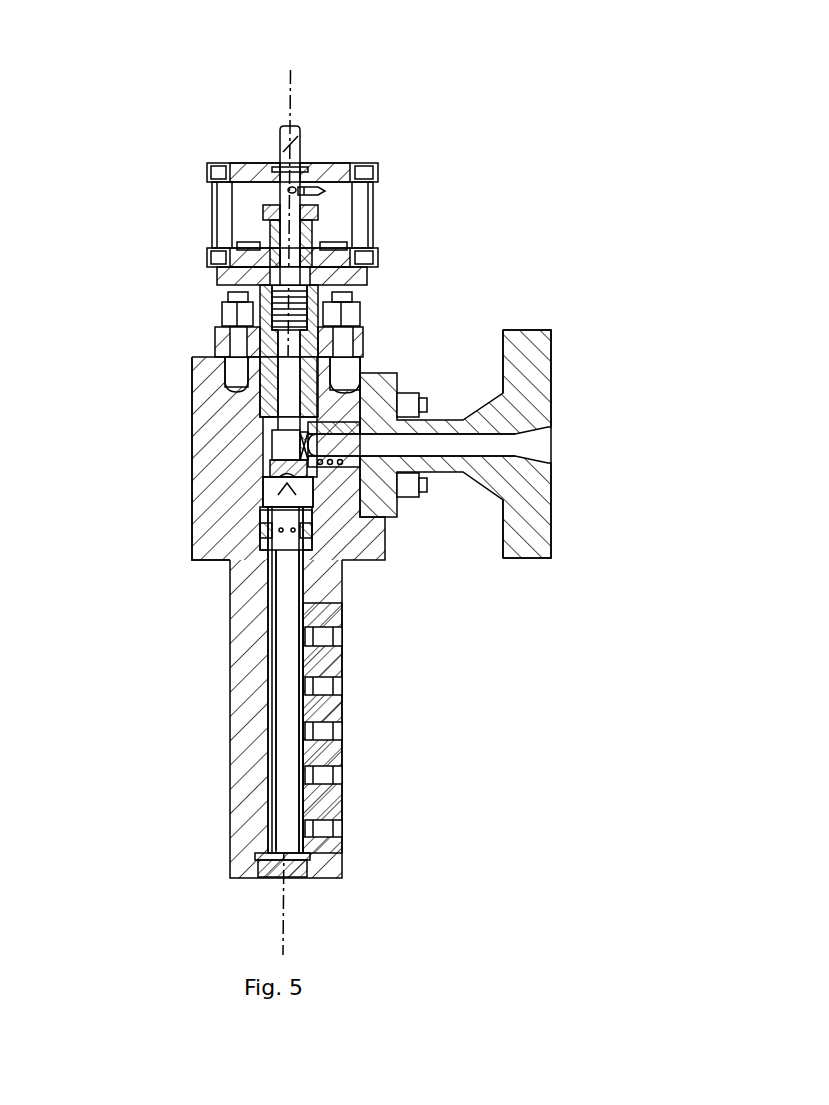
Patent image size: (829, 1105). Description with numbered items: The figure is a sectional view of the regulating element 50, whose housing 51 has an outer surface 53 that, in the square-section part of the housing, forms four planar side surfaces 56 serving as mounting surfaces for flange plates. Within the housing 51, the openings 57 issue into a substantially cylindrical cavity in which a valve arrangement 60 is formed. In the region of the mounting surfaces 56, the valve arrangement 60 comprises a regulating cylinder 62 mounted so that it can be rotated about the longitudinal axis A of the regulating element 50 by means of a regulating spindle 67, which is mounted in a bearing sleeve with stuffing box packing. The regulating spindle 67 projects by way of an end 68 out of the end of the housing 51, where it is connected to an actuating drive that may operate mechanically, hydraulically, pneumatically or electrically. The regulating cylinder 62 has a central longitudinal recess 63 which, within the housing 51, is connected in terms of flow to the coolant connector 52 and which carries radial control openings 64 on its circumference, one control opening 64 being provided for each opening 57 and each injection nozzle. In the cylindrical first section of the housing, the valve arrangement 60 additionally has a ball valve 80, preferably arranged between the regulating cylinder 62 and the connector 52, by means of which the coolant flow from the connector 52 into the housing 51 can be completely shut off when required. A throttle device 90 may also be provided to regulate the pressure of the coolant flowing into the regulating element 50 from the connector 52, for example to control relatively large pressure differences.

The longitudinal axis A is at (293, 78).
The regulating element 50 is at (533, 182).
The housing 51 is at (212, 453).
The coolant connector 52 is at (533, 380).
The outer surface 53 is at (190, 537).
The side surfaces 56 is at (340, 755).
The openings 57 is at (340, 730).
The valve arrangement 60 is at (252, 711).
The regulating cylinder 62 is at (293, 773).
The central longitudinal recess 63 is at (285, 602).
The radial control openings 64 is at (293, 738).
The regulating spindle 67 is at (280, 198).
The end 68 is at (280, 127).
The ball valve 80 is at (272, 430).
The throttle device 90 is at (385, 375).